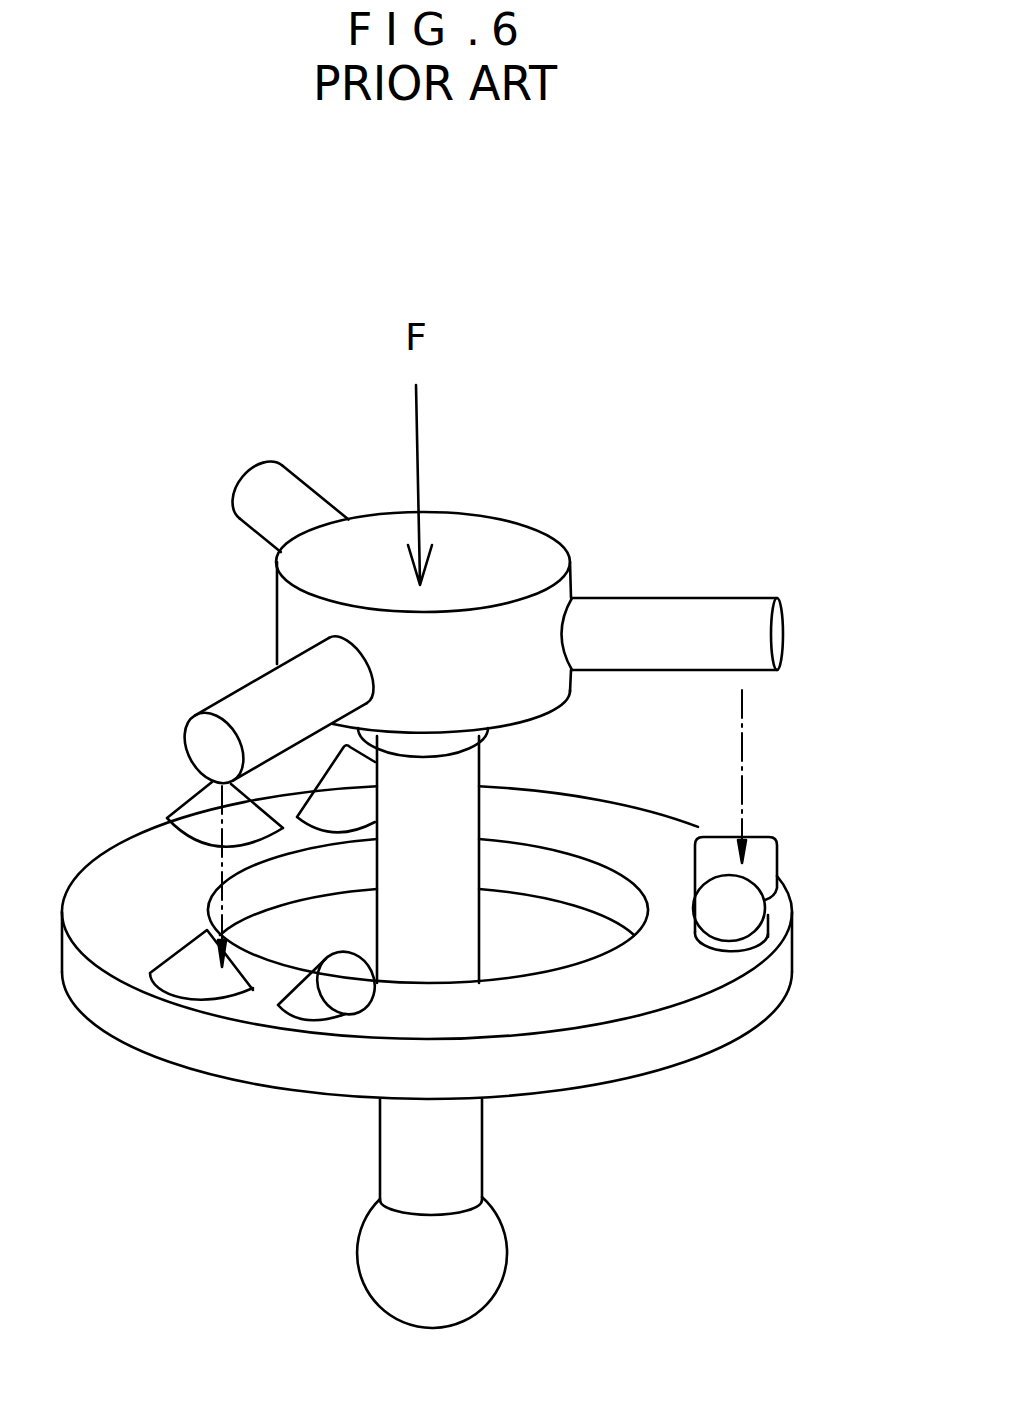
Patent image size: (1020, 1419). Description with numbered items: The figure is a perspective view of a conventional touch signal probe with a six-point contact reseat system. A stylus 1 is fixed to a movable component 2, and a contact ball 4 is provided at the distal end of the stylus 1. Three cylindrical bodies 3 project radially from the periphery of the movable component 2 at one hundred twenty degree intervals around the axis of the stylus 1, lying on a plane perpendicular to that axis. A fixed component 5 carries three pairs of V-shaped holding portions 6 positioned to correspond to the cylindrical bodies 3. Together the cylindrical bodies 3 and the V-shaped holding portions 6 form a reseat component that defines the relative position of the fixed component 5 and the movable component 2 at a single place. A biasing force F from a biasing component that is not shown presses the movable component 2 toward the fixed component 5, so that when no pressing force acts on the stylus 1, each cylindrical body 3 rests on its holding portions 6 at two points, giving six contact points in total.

The stylus 1 is at (408, 1122).
The movable component 2 is at (517, 540).
The cylindrical body 3 is at (267, 498).
The contact ball 4 is at (455, 1262).
The fixed component 5 is at (605, 1055).
The V-shaped holding portion 6 is at (207, 830).